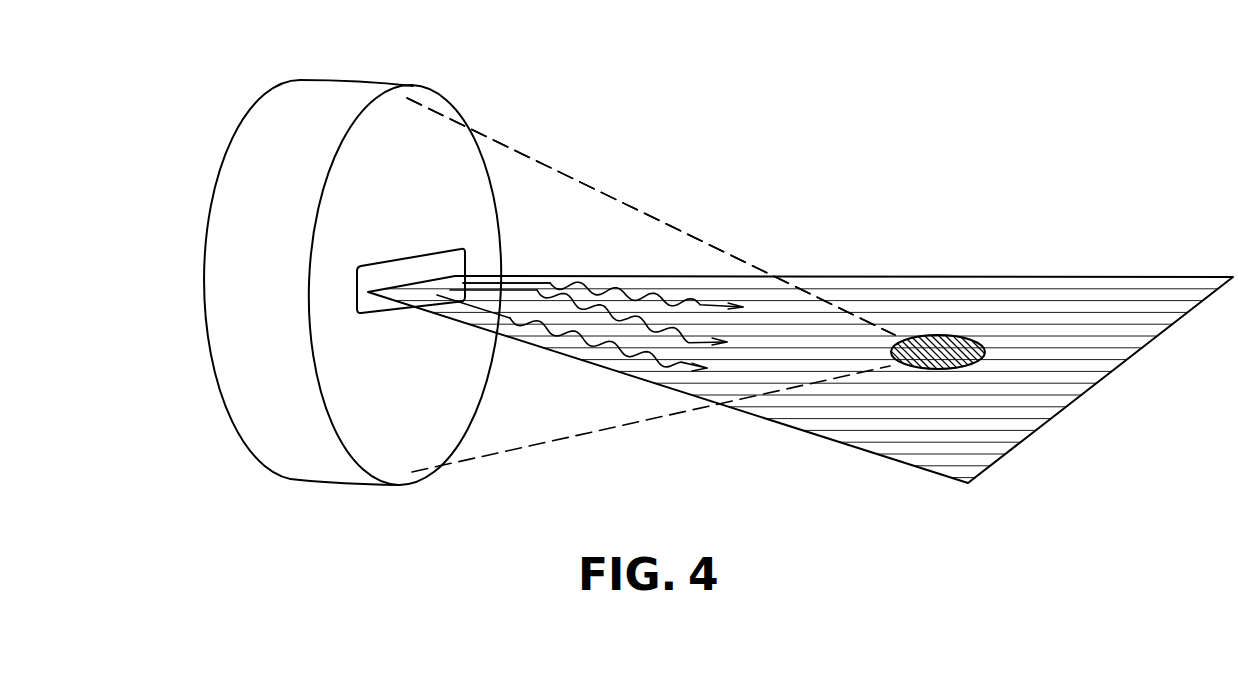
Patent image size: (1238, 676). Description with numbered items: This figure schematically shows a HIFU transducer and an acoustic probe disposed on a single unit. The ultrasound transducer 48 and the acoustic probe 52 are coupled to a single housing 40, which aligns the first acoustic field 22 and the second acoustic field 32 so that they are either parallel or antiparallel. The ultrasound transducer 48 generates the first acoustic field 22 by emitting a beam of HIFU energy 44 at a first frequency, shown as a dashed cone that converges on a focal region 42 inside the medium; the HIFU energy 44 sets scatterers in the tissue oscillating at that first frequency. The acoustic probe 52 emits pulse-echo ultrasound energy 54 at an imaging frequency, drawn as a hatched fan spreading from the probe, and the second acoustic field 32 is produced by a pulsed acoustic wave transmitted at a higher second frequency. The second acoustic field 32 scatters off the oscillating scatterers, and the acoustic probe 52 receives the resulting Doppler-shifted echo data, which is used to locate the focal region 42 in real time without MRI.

The housing 40 is at (280, 52).
The ultrasound transducer 48 is at (387, 121).
The acoustic probe 52 is at (383, 265).
The pulse-echo ultrasound energy 54 is at (895, 277).
The first acoustic field 22 is at (603, 190).
The beam of HIFU energy 44 is at (651, 216).
The second acoustic field 32 is at (646, 315).
The focal region 42 is at (977, 337).